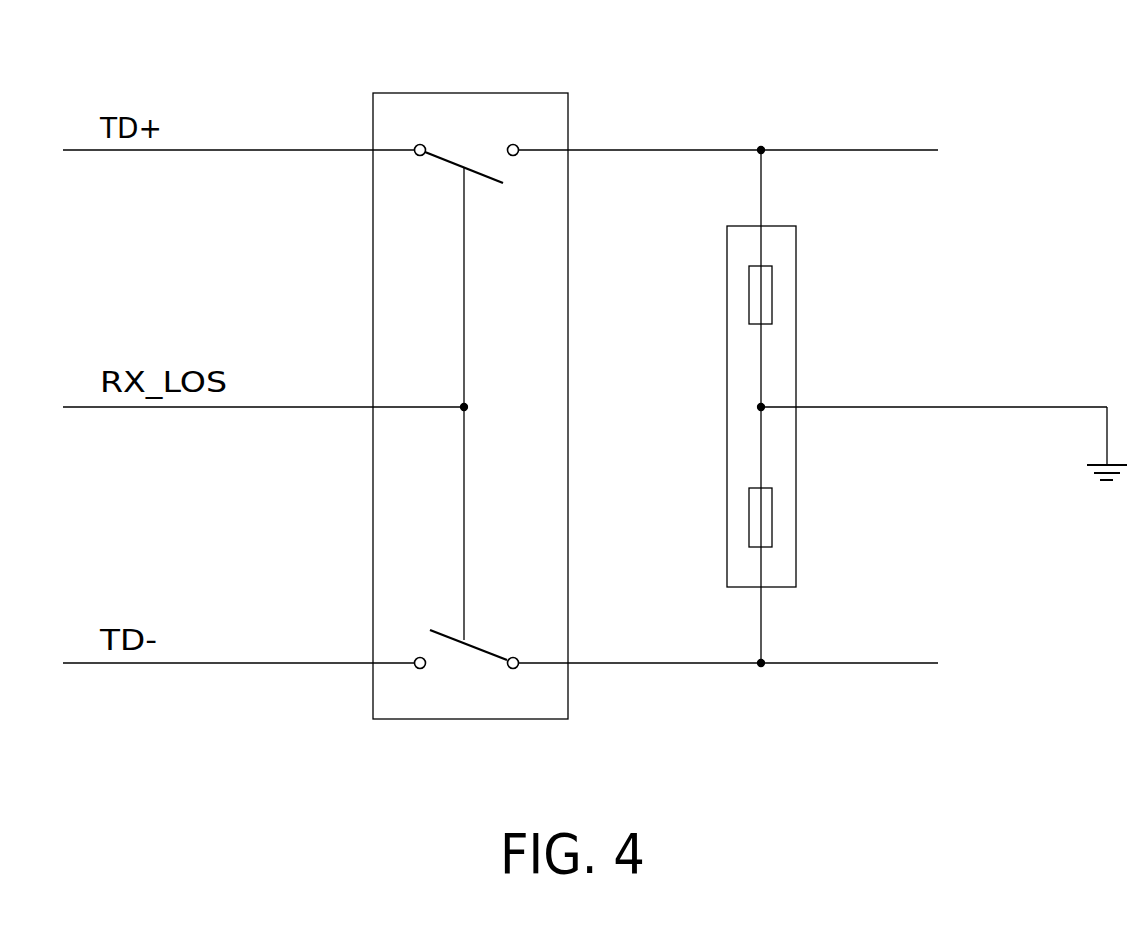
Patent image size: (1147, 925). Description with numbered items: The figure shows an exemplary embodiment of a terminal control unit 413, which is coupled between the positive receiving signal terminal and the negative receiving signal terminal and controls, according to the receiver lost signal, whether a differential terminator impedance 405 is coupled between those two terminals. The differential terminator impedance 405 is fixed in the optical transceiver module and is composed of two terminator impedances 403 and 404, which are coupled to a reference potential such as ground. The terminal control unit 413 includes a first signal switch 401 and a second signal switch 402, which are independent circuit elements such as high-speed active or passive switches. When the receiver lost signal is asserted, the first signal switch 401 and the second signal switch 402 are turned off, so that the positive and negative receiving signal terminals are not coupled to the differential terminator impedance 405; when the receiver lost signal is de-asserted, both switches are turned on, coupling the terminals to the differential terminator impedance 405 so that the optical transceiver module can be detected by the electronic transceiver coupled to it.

The first signal switch 401 is at (474, 160).
The second signal switch 402 is at (470, 663).
The terminator impedance 403 is at (772, 294).
The terminator impedance 404 is at (772, 517).
The differential terminator impedance 405 is at (796, 240).
The terminal control unit 413 is at (568, 196).